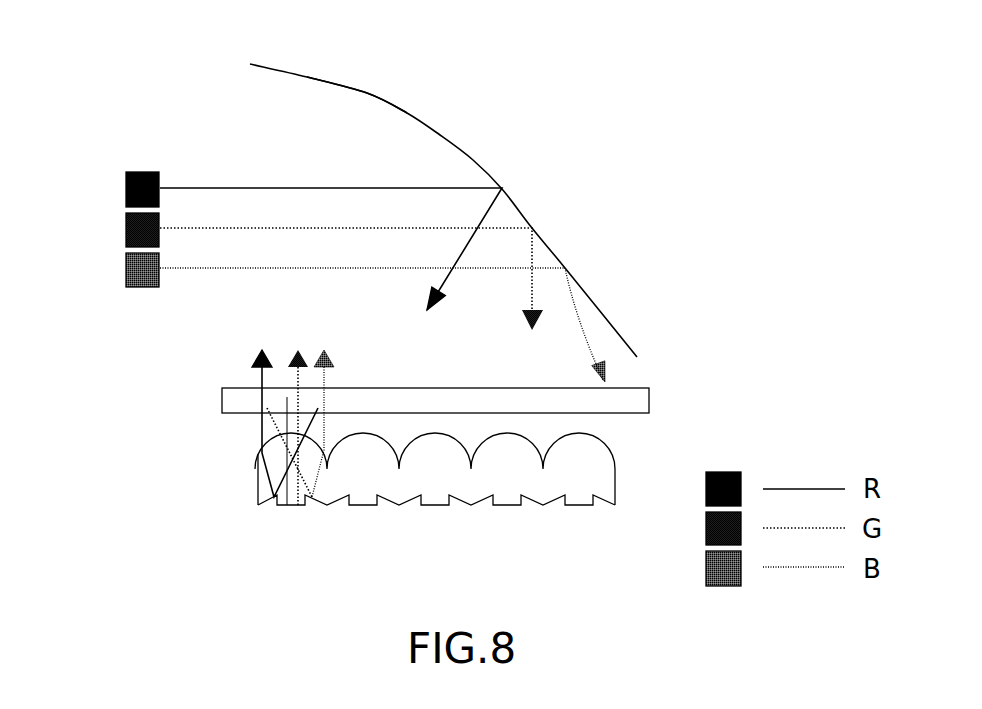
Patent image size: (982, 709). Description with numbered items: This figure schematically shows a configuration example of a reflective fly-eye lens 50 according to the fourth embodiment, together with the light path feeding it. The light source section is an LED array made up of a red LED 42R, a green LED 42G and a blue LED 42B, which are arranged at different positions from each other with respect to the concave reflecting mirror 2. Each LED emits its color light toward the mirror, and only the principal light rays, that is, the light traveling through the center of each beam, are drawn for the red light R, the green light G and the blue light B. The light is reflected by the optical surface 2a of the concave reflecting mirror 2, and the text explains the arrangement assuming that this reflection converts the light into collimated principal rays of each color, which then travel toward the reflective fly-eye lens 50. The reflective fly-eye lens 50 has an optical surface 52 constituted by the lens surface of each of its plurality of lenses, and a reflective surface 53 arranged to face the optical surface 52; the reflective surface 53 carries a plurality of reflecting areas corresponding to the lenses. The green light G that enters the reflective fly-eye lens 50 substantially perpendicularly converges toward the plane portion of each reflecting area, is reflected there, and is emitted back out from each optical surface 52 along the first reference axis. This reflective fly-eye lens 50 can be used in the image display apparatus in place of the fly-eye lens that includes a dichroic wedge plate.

The concave reflecting mirror 2 is at (356, 88).
The optical surface 2a is at (369, 95).
The red LED 42R is at (124, 190).
The green LED 42G is at (124, 230).
The blue LED 42B is at (124, 270).
The red light R is at (213, 186).
The green light G is at (258, 226).
The blue light B is at (212, 270).
The reflective fly-eye lens 50 is at (436, 460).
The optical surface 52 is at (266, 443).
The reflective surface 53 is at (395, 503).